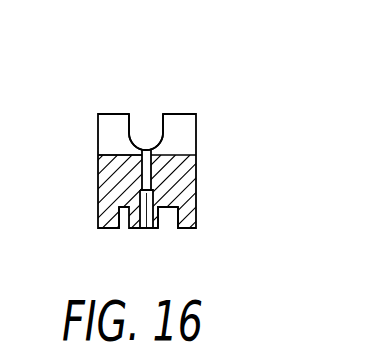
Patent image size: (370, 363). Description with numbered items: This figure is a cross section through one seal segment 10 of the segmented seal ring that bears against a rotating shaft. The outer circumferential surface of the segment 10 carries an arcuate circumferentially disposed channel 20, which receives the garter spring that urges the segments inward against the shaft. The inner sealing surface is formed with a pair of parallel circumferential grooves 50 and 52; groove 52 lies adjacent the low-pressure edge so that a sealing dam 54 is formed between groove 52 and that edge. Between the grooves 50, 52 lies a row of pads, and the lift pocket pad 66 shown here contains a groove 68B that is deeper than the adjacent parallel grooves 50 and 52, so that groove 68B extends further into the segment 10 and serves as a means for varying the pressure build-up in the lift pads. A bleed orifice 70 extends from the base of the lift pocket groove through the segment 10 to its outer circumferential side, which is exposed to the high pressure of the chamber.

The seal segment 10 is at (238, 156).
The arcuate circumferentially disposed channel 20 is at (143, 127).
The bleed orifice 70 is at (130, 170).
The circumferential groove 50 is at (125, 225).
The lift pocket pad 66 is at (136, 230).
The lift pocket groove 68B is at (150, 235).
The sealing dam 54 is at (189, 221).
The circumferential groove 52 is at (172, 221).